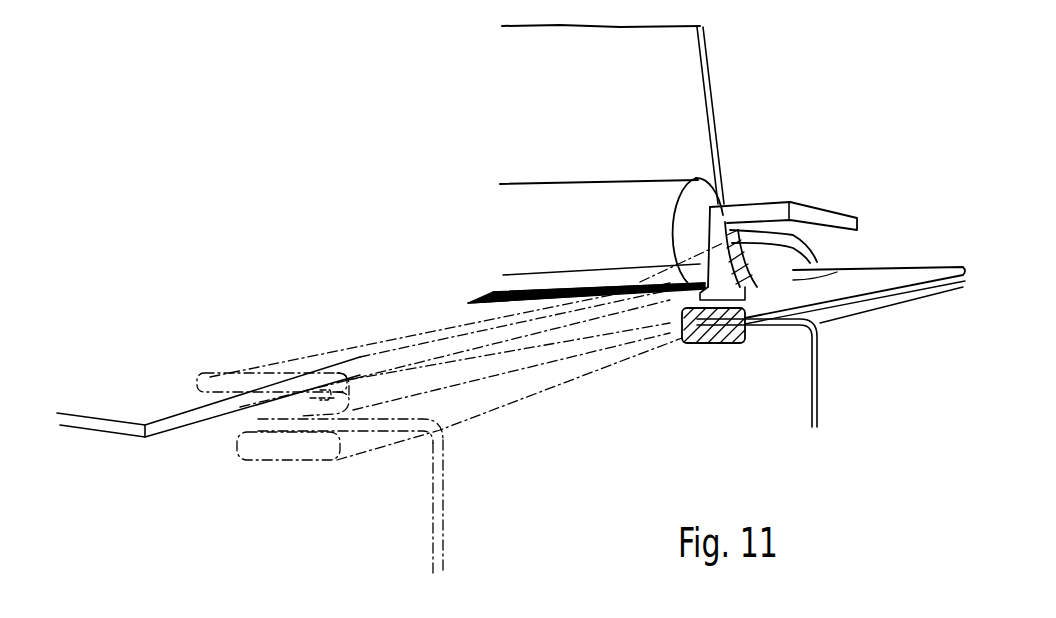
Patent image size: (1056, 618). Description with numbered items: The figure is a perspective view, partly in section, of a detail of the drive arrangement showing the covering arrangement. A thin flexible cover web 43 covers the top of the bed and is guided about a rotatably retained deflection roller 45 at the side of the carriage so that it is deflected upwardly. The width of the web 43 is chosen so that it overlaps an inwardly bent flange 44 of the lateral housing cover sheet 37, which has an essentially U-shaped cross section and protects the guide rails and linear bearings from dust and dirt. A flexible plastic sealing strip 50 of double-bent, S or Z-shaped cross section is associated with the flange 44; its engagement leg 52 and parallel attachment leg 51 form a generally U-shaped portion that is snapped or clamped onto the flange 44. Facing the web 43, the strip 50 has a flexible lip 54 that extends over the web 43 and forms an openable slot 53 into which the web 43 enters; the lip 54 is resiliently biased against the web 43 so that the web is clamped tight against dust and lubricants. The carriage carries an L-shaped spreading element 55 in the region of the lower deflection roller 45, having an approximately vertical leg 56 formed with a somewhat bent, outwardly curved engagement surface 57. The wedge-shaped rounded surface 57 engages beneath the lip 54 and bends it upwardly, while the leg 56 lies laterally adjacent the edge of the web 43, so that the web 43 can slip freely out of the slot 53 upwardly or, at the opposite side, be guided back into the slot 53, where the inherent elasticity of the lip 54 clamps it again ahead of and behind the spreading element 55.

The cover sheet 37 is at (440, 523).
The cover web 43 is at (692, 92).
The inwardly bent flange 44 is at (390, 428).
The deflection roller 45 is at (698, 202).
The sealing strip 50 is at (940, 267).
The attachment leg 51 is at (287, 450).
The engagement leg 52 is at (280, 410).
The slot 53 is at (323, 393).
The lip 54 is at (833, 257).
The spreading element 55 is at (807, 213).
The leg 56 is at (693, 343).
The engagement surface 57 is at (760, 287).